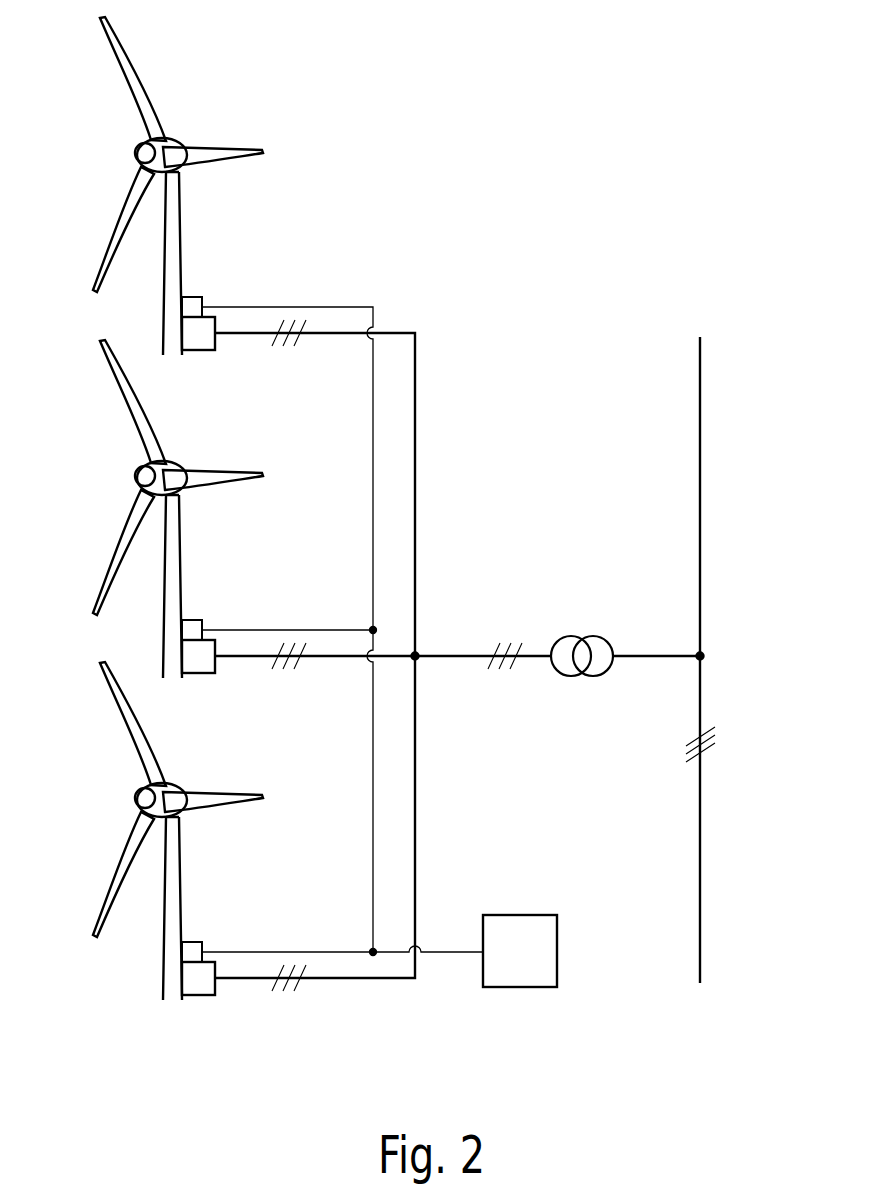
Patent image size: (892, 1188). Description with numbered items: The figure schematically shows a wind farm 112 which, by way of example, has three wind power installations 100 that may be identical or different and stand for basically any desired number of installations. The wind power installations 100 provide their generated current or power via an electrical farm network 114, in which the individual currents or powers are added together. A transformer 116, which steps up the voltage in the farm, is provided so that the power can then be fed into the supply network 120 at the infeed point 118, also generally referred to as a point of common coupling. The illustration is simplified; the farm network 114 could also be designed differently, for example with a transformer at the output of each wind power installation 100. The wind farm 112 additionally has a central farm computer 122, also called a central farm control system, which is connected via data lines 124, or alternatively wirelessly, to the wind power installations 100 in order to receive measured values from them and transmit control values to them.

The wind power installation 100 is at (177, 243).
The wind farm 112 is at (547, 163).
The electrical farm network 114 is at (445, 655).
The transformer 116 is at (587, 626).
The infeed point 118 is at (708, 648).
The supply network 120 is at (700, 383).
The central farm computer 122 is at (527, 913).
The data line 124 is at (372, 765).